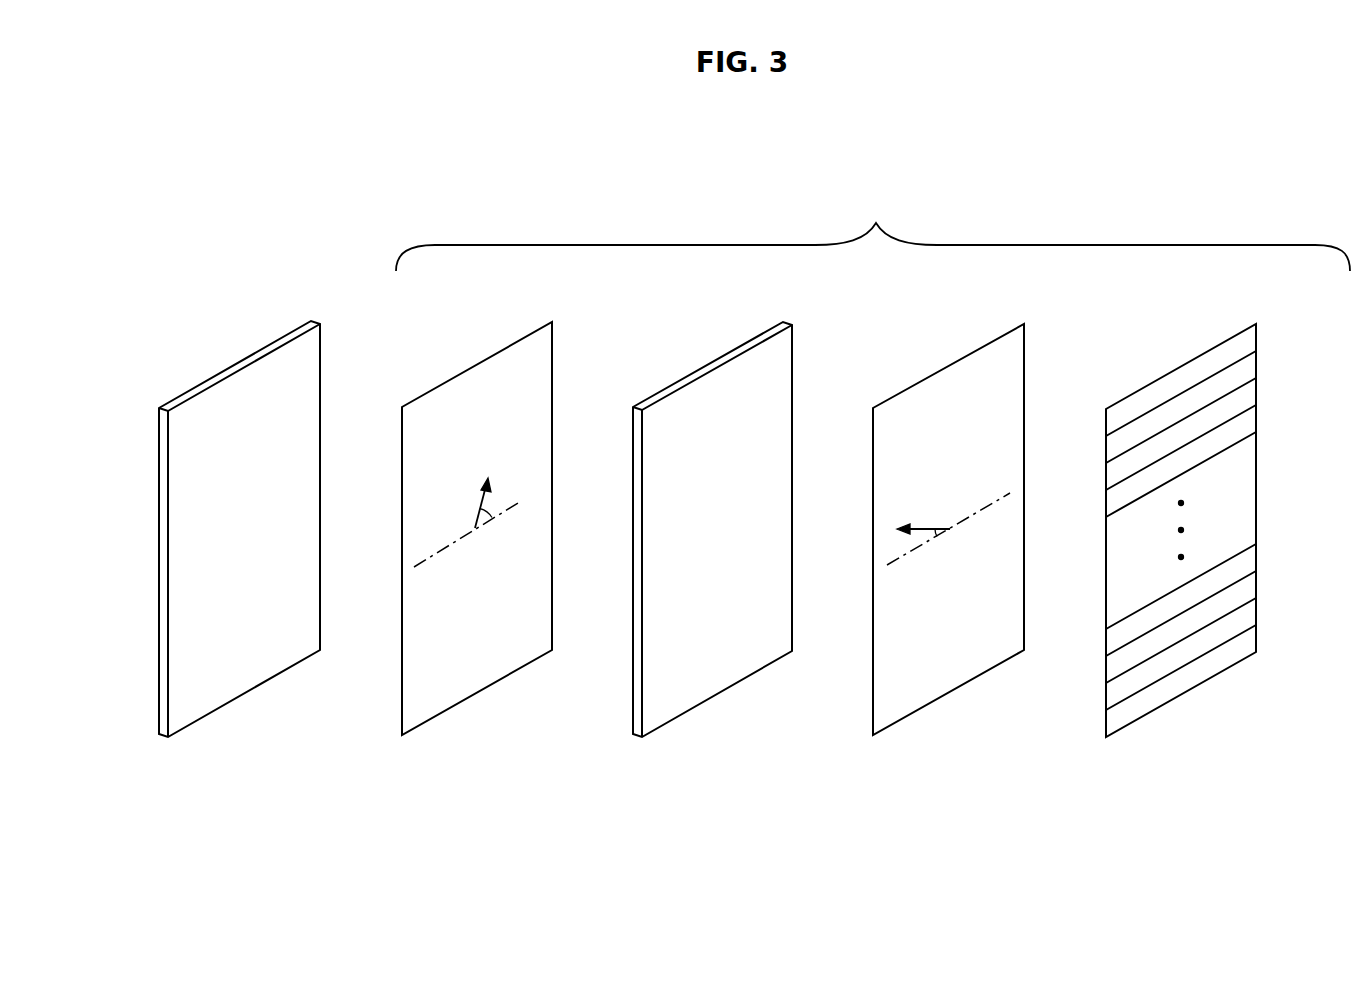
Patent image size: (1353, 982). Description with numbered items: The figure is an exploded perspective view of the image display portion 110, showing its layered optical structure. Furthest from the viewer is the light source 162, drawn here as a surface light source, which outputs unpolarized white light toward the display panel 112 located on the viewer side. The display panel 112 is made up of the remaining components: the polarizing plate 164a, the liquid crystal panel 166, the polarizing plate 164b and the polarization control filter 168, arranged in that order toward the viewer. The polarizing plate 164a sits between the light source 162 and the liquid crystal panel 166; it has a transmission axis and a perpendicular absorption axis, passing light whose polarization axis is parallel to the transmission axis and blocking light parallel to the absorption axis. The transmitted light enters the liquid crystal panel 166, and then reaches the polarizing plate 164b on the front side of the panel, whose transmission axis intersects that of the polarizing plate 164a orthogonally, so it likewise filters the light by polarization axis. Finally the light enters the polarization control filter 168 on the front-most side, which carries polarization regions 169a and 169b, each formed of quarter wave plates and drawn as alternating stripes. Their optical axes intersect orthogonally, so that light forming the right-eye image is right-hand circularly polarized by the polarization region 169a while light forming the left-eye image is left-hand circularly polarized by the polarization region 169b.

The image display portion 110 is at (372, 201).
The display panel 112 is at (873, 465).
The light source 162 is at (288, 333).
The polarizing plate 164a is at (532, 333).
The liquid crystal panel 166 is at (763, 333).
The polarizing plate 164b is at (1002, 336).
The polarization control filter 168 is at (1234, 337).
The polarization region 169a is at (1257, 338).
The polarization region 169b is at (1257, 365).